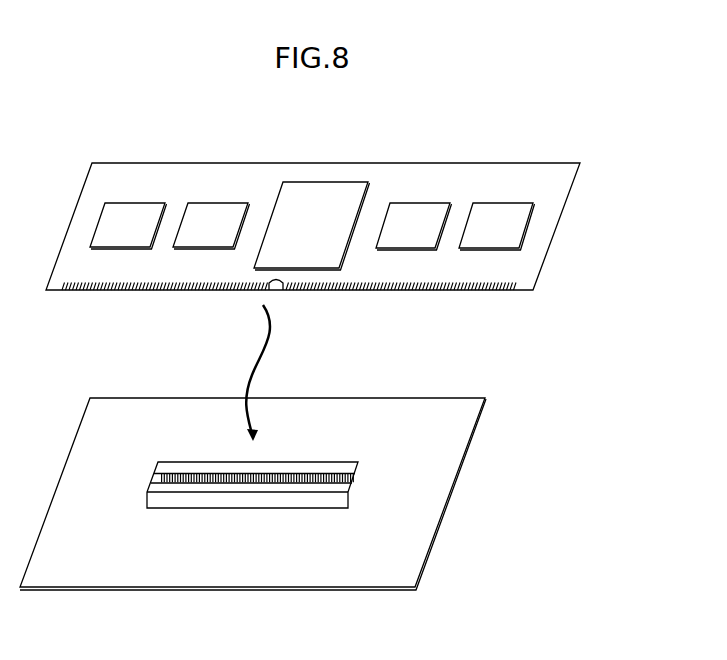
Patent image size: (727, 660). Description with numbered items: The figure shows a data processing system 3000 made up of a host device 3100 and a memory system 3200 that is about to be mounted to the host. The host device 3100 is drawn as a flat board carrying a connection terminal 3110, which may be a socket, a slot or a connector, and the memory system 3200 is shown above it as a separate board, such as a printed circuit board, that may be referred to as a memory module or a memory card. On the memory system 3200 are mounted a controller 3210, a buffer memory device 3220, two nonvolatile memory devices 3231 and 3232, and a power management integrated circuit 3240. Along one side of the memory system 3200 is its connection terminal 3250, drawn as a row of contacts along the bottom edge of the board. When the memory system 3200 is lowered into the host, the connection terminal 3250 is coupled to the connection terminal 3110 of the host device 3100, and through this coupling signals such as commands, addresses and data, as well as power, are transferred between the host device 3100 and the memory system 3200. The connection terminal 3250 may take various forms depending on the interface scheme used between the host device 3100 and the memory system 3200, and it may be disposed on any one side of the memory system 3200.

The data processing system 3000 is at (183, 133).
The host device 3100 is at (253, 494).
The connection terminal 3110 is at (360, 464).
The memory system 3200 is at (313, 226).
The controller 3210 is at (312, 226).
The buffer memory device 3220 is at (211, 226).
The nonvolatile memory device 3231 is at (414, 226).
The nonvolatile memory device 3232 is at (497, 226).
The power management integrated circuit 3240 is at (128, 226).
The connection terminal 3250 is at (75, 291).